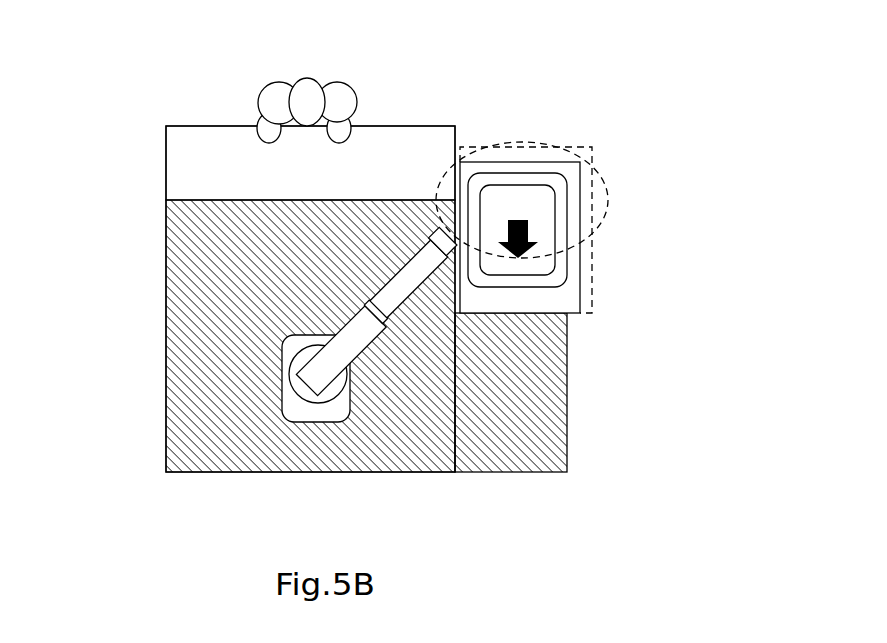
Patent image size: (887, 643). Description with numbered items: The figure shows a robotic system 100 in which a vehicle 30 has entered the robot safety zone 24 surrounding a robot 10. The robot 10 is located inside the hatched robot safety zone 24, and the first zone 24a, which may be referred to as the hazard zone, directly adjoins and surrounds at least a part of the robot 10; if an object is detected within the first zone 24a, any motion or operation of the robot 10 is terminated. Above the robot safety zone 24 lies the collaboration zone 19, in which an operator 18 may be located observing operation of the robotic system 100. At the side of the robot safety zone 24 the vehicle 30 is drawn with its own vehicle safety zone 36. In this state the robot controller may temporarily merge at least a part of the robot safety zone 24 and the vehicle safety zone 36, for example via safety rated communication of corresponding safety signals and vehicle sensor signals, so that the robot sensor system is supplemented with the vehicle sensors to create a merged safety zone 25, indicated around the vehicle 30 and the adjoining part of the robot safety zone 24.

The robotic system 100 is at (482, 104).
The operator 18 is at (257, 87).
The collaboration zone 19 is at (167, 163).
The robot safety zone 24 is at (166, 302).
The first zone 24a is at (194, 395).
The robot 10 is at (281, 432).
The vehicle 30 is at (560, 207).
The merged safety zone 25 is at (623, 211).
The vehicle safety zone 36 is at (586, 259).